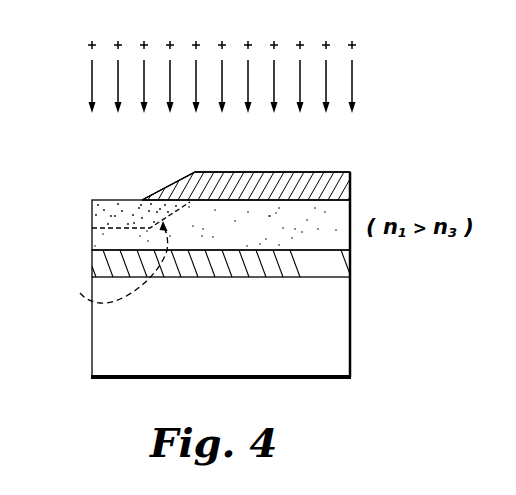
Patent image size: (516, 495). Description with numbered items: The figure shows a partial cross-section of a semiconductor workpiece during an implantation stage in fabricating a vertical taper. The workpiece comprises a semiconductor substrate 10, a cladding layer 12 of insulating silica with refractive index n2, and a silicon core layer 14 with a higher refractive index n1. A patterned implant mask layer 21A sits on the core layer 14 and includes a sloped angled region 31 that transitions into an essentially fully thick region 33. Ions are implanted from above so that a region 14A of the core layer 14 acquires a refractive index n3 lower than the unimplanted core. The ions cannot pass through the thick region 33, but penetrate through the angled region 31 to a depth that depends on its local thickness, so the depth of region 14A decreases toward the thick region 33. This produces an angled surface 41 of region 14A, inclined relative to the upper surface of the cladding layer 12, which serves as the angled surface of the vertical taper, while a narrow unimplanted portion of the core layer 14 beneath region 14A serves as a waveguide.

The semiconductor substrate 10 is at (92, 355).
The cladding layer 12 is at (92, 267).
The core layer 14 is at (92, 237).
The region 14A is at (92, 212).
The patterned implant mask layer 21A is at (353, 190).
The angled region 31 is at (154, 179).
The thick region 33 is at (275, 163).
The angled surface 41 is at (80, 293).